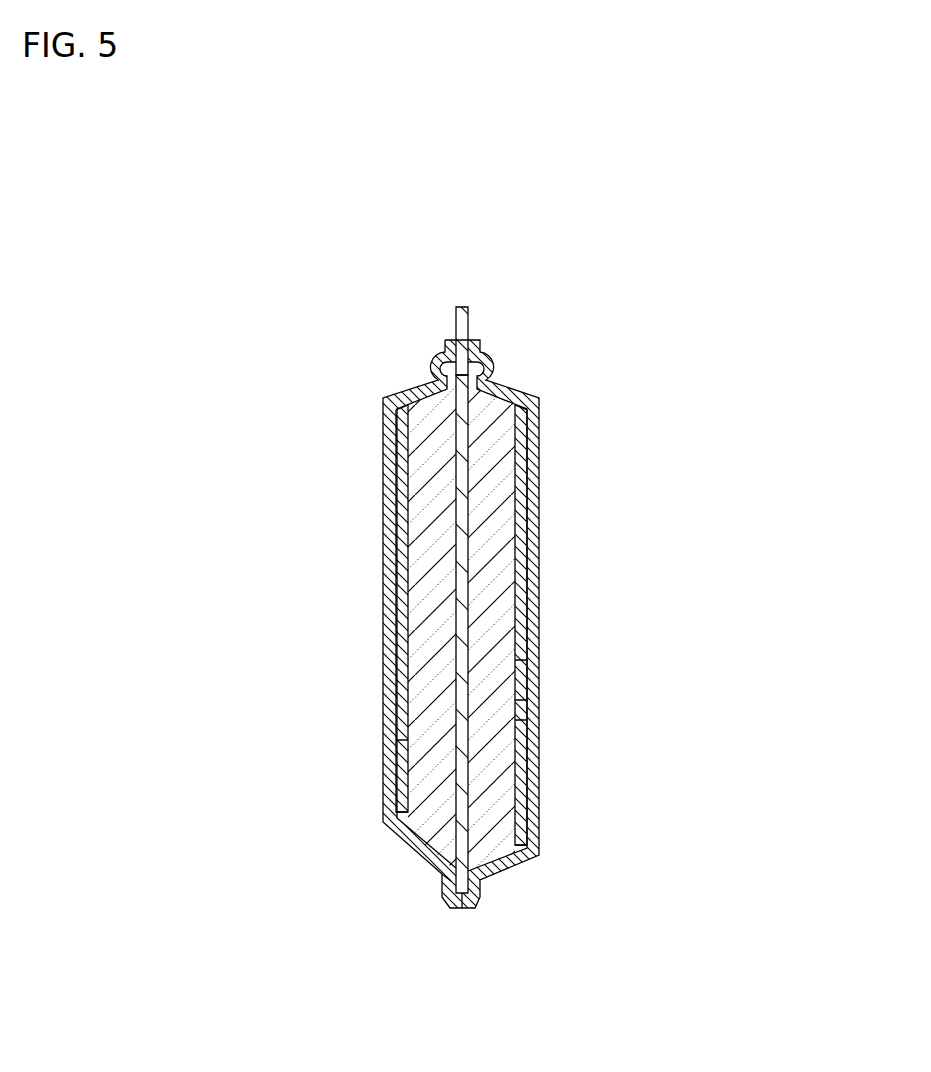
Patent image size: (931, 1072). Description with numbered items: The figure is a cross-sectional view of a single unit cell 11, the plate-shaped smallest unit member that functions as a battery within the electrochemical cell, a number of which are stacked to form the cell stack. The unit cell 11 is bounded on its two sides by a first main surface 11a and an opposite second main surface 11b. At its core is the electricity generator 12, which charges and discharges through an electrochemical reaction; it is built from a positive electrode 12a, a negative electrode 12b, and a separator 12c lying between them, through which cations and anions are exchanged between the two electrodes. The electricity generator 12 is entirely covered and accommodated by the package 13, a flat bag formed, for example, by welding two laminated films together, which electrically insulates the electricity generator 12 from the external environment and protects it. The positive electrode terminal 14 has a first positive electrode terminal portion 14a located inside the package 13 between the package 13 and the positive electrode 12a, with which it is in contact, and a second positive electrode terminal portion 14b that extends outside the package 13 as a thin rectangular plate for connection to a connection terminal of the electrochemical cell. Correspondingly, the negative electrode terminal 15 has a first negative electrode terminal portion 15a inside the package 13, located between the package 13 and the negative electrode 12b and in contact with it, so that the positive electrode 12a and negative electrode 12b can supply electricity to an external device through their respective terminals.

The unit cell 11 is at (596, 278).
The first main surface 11a is at (541, 648).
The second main surface 11b is at (392, 752).
The electricity generator 12 is at (285, 443).
The positive electrode 12a is at (496, 445).
The negative electrode 12b is at (436, 518).
The separator 12c is at (460, 487).
The package 13 is at (517, 693).
The positive electrode terminal 14 is at (516, 572).
The first positive electrode terminal portion 14a is at (517, 732).
The second positive electrode terminal portion 14b is at (465, 322).
The negative electrode terminal 15 is at (403, 622).
The first negative electrode terminal portion 15a is at (403, 773).